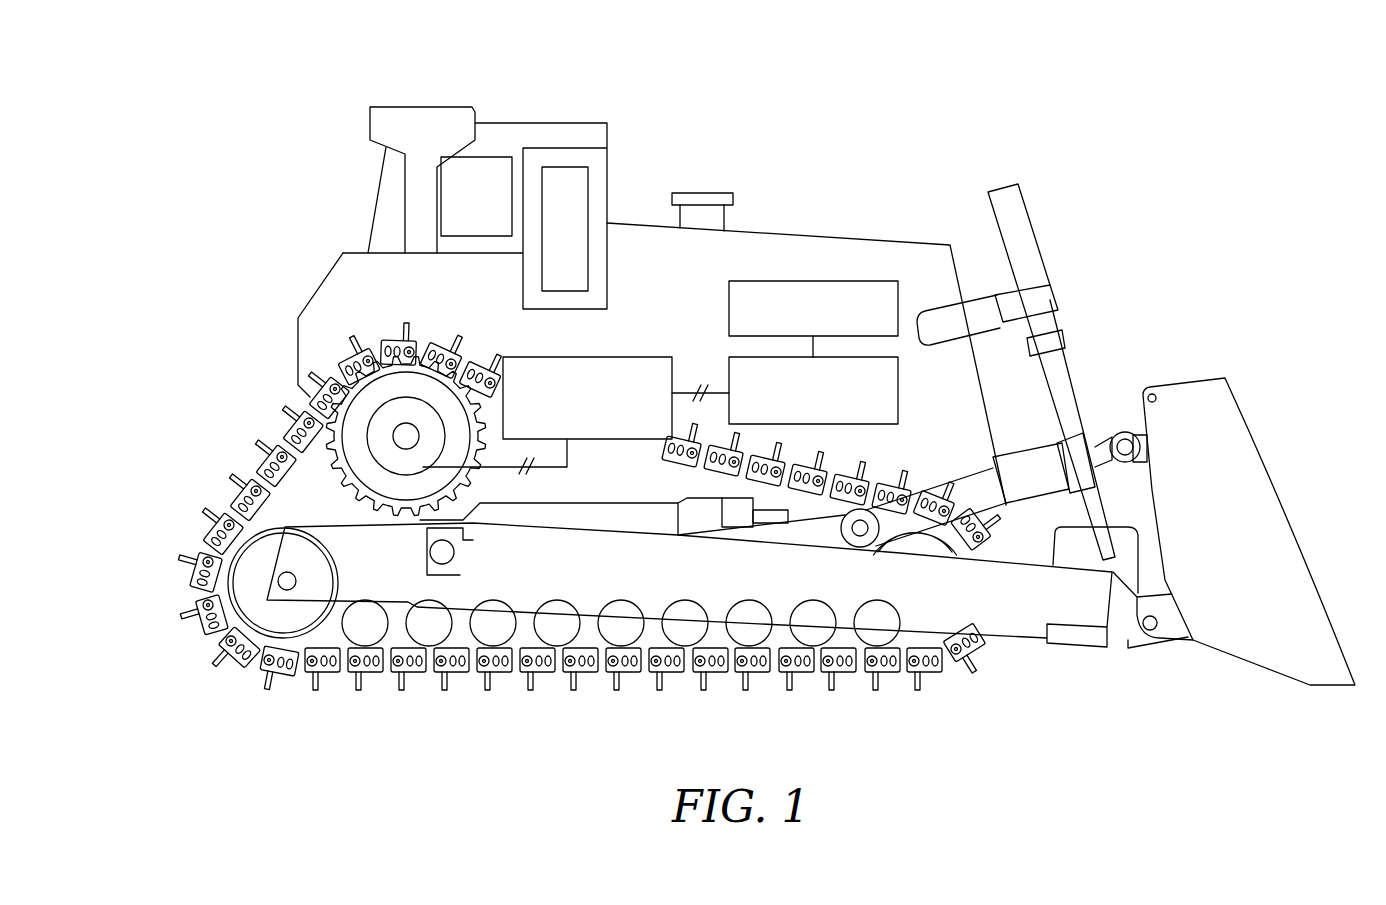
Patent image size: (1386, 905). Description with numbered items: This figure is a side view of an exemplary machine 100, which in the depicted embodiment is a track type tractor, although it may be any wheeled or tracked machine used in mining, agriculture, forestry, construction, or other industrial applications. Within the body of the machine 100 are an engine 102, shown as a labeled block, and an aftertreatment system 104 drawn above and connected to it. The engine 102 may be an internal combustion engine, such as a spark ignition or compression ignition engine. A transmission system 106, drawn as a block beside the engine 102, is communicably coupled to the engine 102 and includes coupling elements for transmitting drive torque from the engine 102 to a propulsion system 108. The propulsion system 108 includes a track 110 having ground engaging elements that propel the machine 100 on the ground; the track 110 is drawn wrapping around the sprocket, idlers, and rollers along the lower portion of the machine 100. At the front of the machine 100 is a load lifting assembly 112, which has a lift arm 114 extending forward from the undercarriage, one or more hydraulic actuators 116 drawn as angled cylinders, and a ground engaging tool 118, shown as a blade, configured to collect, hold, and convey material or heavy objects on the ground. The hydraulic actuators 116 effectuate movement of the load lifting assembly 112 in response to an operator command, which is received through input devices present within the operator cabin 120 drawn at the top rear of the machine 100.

The machine 100 is at (1160, 118).
The engine 102 is at (830, 402).
The aftertreatment system 104 is at (830, 320).
The transmission system 106 is at (604, 410).
The propulsion system 108 is at (358, 417).
The track 110 is at (226, 492).
The load lifting assembly 112 is at (1210, 336).
The lift arm 114 is at (766, 594).
The hydraulic actuators 116 is at (1050, 322).
The ground engaging tool 118 is at (1238, 542).
The operator cabin 120 is at (568, 132).